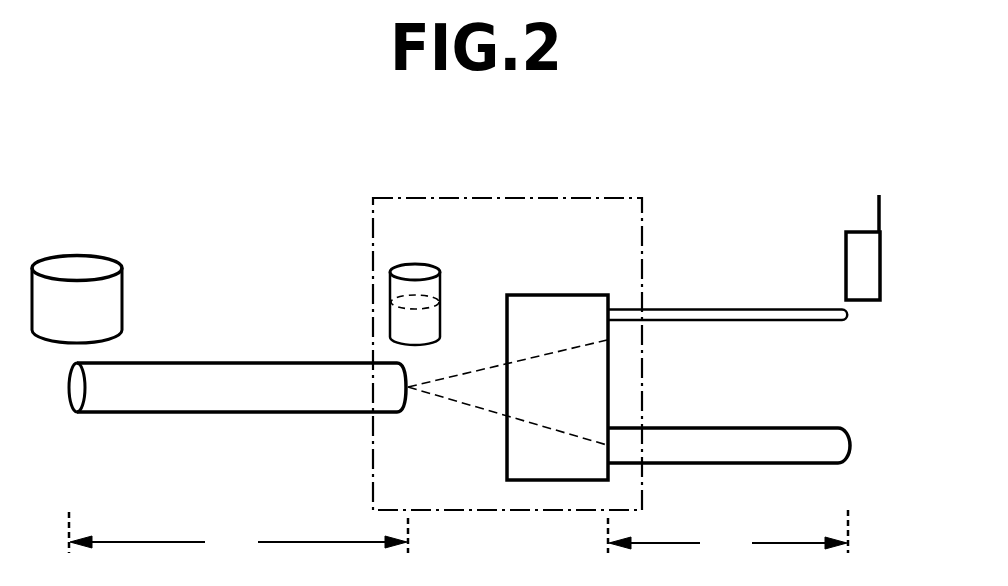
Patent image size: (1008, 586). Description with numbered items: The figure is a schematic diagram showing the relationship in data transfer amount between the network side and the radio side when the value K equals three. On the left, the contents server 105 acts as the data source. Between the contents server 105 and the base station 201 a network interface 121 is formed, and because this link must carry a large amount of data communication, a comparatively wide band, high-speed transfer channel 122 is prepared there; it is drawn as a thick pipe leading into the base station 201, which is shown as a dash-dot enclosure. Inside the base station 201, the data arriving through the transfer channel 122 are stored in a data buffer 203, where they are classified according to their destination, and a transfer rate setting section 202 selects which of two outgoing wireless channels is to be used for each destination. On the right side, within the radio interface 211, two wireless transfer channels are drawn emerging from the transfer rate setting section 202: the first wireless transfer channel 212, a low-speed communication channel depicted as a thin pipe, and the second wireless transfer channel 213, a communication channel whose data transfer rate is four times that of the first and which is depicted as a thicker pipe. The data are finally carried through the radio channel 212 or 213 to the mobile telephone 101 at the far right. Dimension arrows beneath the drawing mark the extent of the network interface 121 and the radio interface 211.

The mobile telephone 101 is at (846, 258).
The contents server 105 is at (124, 284).
The network interface 121 is at (238, 533).
The transfer channel 122 is at (244, 362).
The base station 201 is at (648, 233).
The transfer rate setting section 202 is at (541, 295).
The data buffer 203 is at (440, 288).
The radio interface 211 is at (728, 533).
The first wireless transfer channel 212 is at (707, 311).
The second wireless transfer channel 213 is at (727, 428).